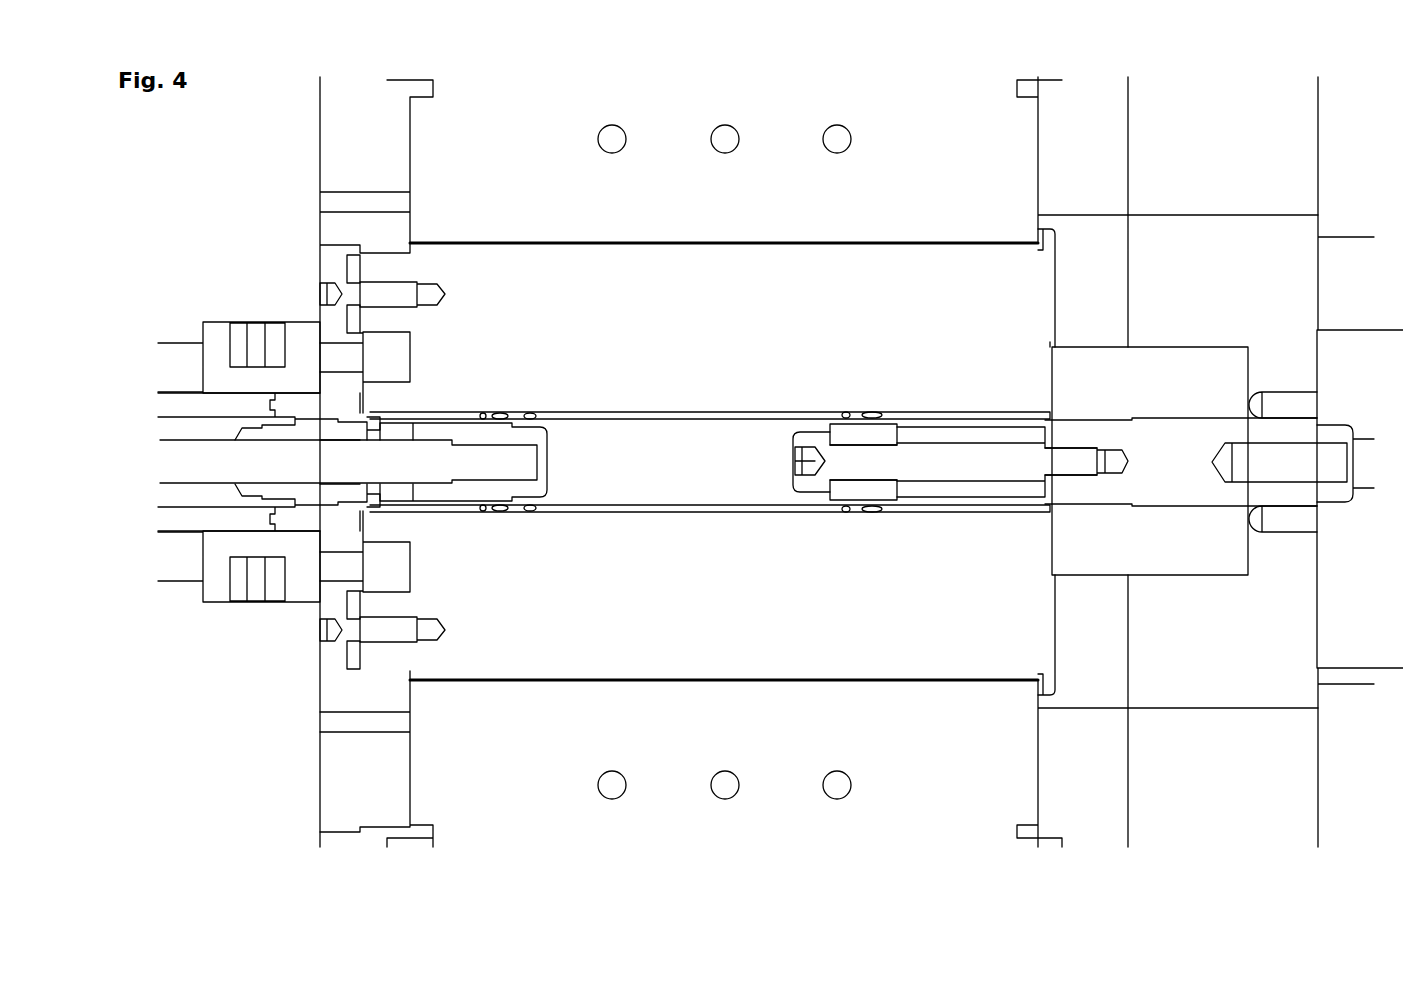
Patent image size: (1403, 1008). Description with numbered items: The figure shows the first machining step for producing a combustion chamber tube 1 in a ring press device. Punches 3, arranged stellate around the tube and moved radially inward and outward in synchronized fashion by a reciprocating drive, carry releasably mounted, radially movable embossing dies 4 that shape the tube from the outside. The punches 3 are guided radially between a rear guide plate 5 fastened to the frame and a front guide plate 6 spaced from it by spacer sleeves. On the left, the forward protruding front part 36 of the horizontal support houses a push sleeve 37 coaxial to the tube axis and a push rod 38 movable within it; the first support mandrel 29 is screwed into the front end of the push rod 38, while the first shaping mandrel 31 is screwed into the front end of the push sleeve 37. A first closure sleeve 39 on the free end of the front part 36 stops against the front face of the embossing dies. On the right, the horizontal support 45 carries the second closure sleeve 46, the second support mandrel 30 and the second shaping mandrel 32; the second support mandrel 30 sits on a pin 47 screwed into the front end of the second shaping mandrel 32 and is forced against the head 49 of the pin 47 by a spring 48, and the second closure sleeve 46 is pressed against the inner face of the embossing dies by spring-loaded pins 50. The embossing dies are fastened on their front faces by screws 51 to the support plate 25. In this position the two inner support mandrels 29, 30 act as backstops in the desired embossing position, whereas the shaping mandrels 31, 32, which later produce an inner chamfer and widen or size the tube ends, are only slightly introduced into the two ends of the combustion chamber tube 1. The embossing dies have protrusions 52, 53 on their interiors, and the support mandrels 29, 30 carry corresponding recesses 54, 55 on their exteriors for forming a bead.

The combustion chamber tube 1 is at (696, 418).
The punch 3 is at (985, 170).
The embossing die 4 is at (678, 258).
The rear guide plate 5 is at (1112, 185).
The front guide plate 6 is at (355, 170).
The support plate 25 is at (330, 258).
The first support mandrel 29 is at (470, 430).
The second support mandrel 30 is at (880, 430).
The first shaping mandrel 31 is at (318, 490).
The second shaping mandrel 32 is at (1068, 480).
The front part 36 is at (183, 405).
The push sleeve 37 is at (183, 495).
The push rod 38 is at (430, 465).
The first closure sleeve 39 is at (312, 400).
The horizontal support 45 is at (1352, 345).
The second closure sleeve 46 is at (1193, 385).
The pin 47 is at (975, 455).
The spring 48 is at (928, 495).
The head 49 is at (812, 490).
The spring-loaded pin 50 is at (1275, 392).
The screw 51 is at (393, 300).
The protrusion 52 is at (520, 430).
The protrusion 53 is at (860, 415).
The recess 54 is at (530, 432).
The recess 55 is at (843, 415).